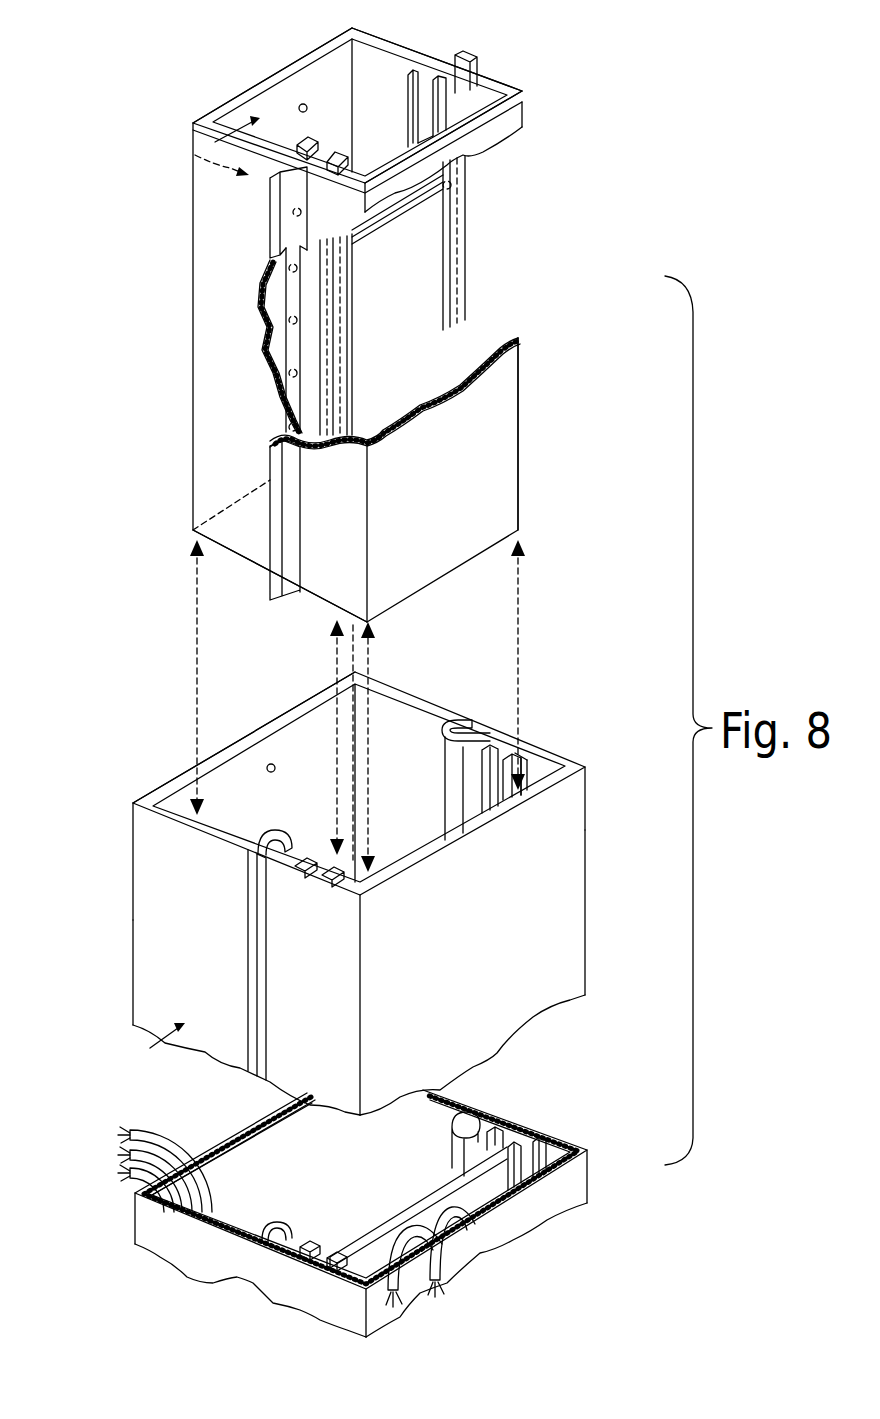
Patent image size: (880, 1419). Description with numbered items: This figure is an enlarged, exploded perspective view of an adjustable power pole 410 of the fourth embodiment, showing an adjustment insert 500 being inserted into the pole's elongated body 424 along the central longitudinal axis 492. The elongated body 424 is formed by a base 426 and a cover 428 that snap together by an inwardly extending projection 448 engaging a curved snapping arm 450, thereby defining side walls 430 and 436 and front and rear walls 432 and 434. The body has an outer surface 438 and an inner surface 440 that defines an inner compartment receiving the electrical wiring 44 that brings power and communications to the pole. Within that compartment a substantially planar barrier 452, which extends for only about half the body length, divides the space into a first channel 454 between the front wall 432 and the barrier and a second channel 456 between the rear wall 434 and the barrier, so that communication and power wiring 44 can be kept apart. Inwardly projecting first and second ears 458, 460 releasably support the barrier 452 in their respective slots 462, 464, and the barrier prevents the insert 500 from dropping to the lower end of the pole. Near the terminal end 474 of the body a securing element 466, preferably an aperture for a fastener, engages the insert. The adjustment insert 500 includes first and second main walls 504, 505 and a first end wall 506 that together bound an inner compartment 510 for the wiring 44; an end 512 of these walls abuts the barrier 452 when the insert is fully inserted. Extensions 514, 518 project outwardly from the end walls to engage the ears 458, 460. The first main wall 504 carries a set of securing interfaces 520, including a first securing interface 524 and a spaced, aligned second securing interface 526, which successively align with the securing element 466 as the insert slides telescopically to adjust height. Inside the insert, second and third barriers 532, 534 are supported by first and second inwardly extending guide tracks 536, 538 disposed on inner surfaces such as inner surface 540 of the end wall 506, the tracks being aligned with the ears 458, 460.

The electrical wiring 44 is at (120, 1167).
The adjustable power pole 410 is at (135, 109).
The elongated body 424 is at (592, 898).
The base 426 is at (587, 853).
The cover 428 is at (128, 824).
The side wall 430 is at (410, 688).
The front wall 432 is at (543, 1005).
The rear wall 434 is at (160, 783).
The side wall 436 is at (142, 931).
The outer surface 438 is at (150, 1050).
The inner surface 440 is at (310, 722).
The inwardly extending projection 448 is at (298, 830).
The curved snapping arm 450 is at (257, 827).
The barrier 452 is at (400, 1203).
The first channel 454 is at (550, 1135).
The second channel 456 is at (248, 1163).
The first ear 458 is at (530, 747).
The second ear 460 is at (307, 860).
The slot 462 is at (523, 752).
The slot 464 is at (312, 875).
The securing element 466 is at (270, 760).
The terminal end 474 is at (586, 783).
The central longitudinal axis 492 is at (353, 653).
The adjustment insert 500 is at (605, 222).
The first main wall 504 is at (237, 97).
The second main wall 505 is at (497, 133).
The first end wall 506 is at (383, 41).
The inner compartment 510 is at (495, 82).
The end 512 is at (235, 555).
The extension 514 is at (477, 53).
The extension 518 is at (290, 477).
The set of securing interfaces 520 is at (215, 142).
The first securing interface 524 is at (298, 105).
The second securing interface 526 is at (270, 228).
The second barrier 532 is at (415, 210).
The third barrier 534 is at (437, 208).
The first guide track 536 is at (425, 103).
The second guide track 538 is at (322, 148).
The inner surface 540 is at (466, 84).